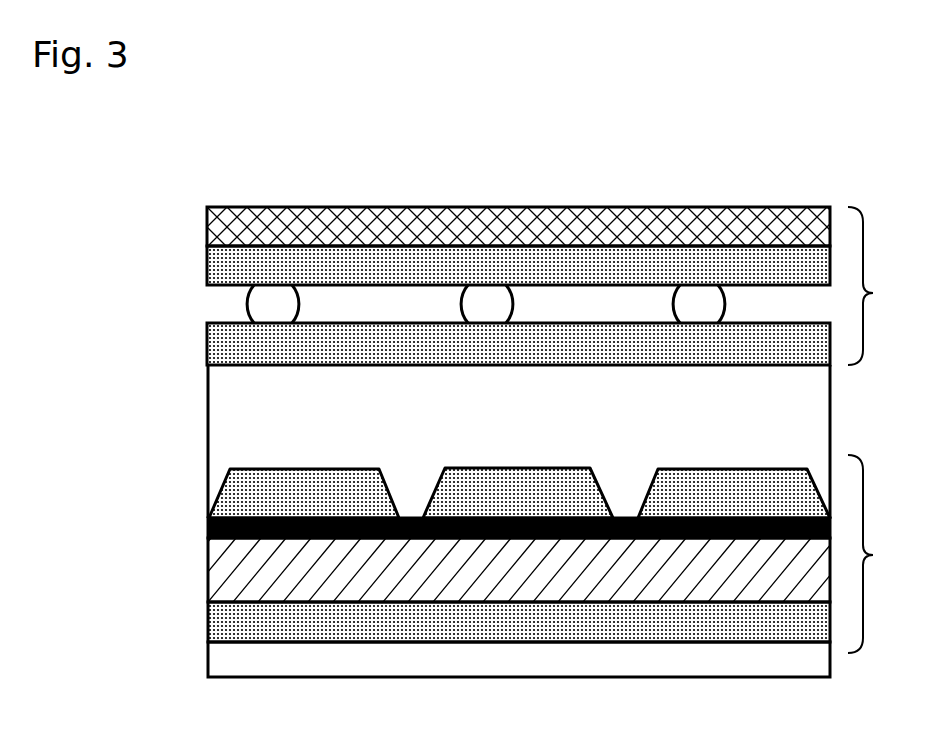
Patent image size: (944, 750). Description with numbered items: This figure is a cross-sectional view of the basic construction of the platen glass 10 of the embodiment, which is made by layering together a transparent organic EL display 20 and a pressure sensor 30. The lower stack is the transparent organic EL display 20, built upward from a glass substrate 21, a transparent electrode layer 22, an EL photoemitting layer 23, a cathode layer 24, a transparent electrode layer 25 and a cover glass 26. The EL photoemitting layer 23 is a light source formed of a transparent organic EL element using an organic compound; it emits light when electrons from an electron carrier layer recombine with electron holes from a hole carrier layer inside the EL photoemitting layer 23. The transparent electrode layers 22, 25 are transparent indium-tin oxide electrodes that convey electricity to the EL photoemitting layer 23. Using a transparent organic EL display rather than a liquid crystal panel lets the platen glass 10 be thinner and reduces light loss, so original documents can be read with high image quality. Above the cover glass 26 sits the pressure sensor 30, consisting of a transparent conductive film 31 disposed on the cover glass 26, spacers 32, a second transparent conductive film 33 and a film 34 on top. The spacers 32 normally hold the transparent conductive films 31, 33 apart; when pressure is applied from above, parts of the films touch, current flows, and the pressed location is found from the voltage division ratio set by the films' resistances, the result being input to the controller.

The platen glass 10 is at (626, 168).
The transparent organic EL display 20 is at (883, 554).
The glass substrate 21 is at (224, 662).
The transparent electrode layer 22 is at (214, 619).
The EL photoemitting layer 23 is at (229, 573).
The cathode layer 24 is at (208, 527).
The transparent electrode layer 25 is at (238, 486).
The cover glass 26 is at (226, 418).
The pressure sensor 30 is at (883, 286).
The transparent conductive film 31 is at (224, 352).
The spacers 32 is at (263, 304).
The transparent conductive film 33 is at (224, 261).
The film 34 is at (232, 225).